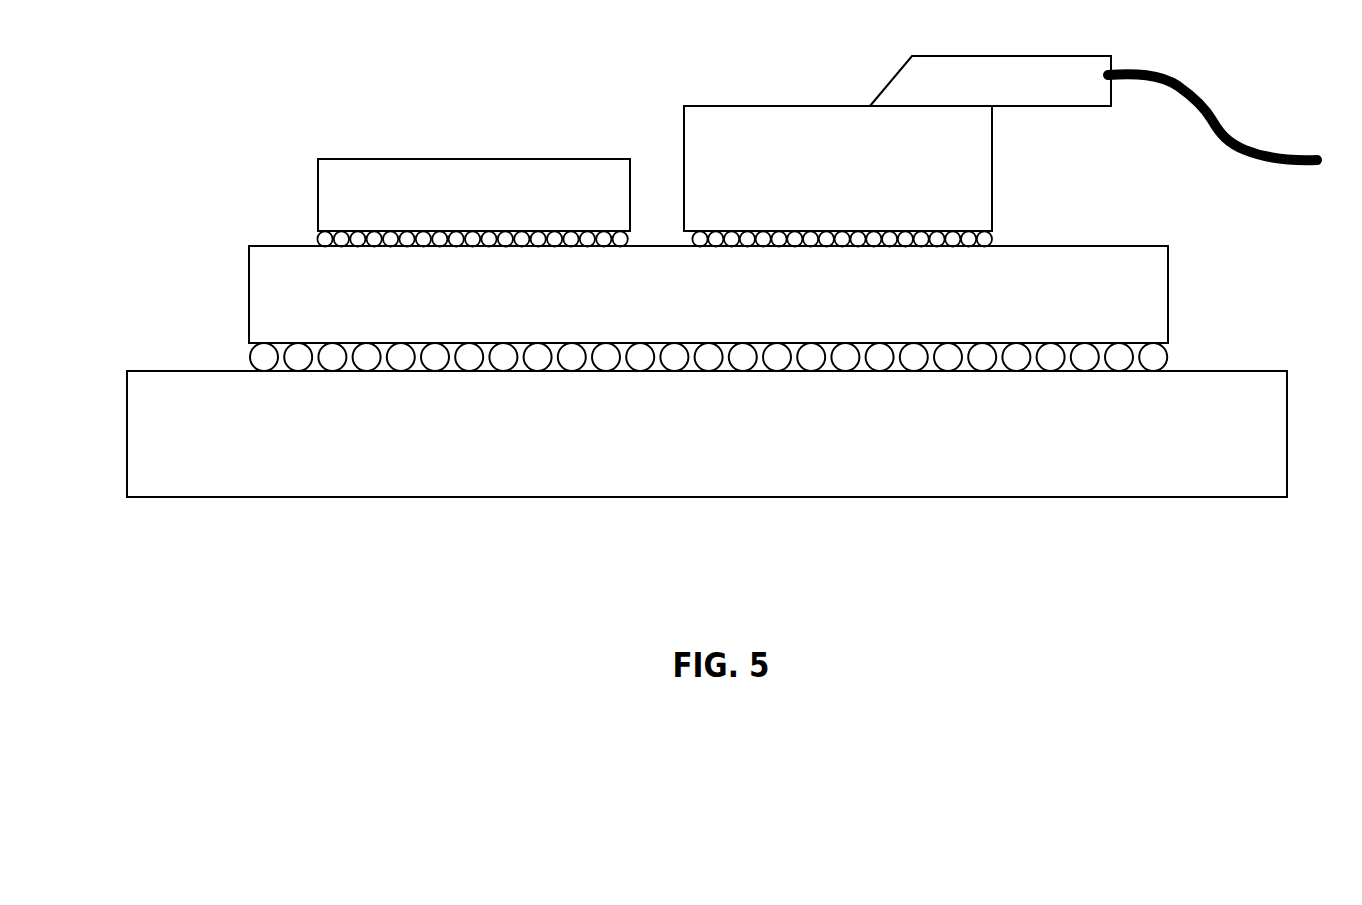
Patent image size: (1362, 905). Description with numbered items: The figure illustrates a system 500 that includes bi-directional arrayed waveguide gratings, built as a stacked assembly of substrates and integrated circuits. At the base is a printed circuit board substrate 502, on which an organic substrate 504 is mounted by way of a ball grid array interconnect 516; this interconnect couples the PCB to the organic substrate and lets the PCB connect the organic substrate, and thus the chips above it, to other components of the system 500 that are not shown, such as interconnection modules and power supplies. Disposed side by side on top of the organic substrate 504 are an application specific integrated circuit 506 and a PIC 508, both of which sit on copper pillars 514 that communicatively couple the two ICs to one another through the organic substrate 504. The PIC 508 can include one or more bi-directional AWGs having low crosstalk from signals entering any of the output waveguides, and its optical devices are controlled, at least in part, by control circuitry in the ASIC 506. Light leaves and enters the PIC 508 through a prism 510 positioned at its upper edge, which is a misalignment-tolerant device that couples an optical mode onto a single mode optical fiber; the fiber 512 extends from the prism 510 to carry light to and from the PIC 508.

The system 500 is at (316, 76).
The printed circuit board substrate 502 is at (707, 434).
The organic substrate 504 is at (708, 294).
The application specific integrated circuit 506 is at (474, 195).
The PIC 508 is at (838, 168).
The prism 510 is at (990, 81).
The fiber 512 is at (1184, 82).
The copper pillars 514 is at (698, 232).
The ball grid array interconnect 516 is at (249, 355).